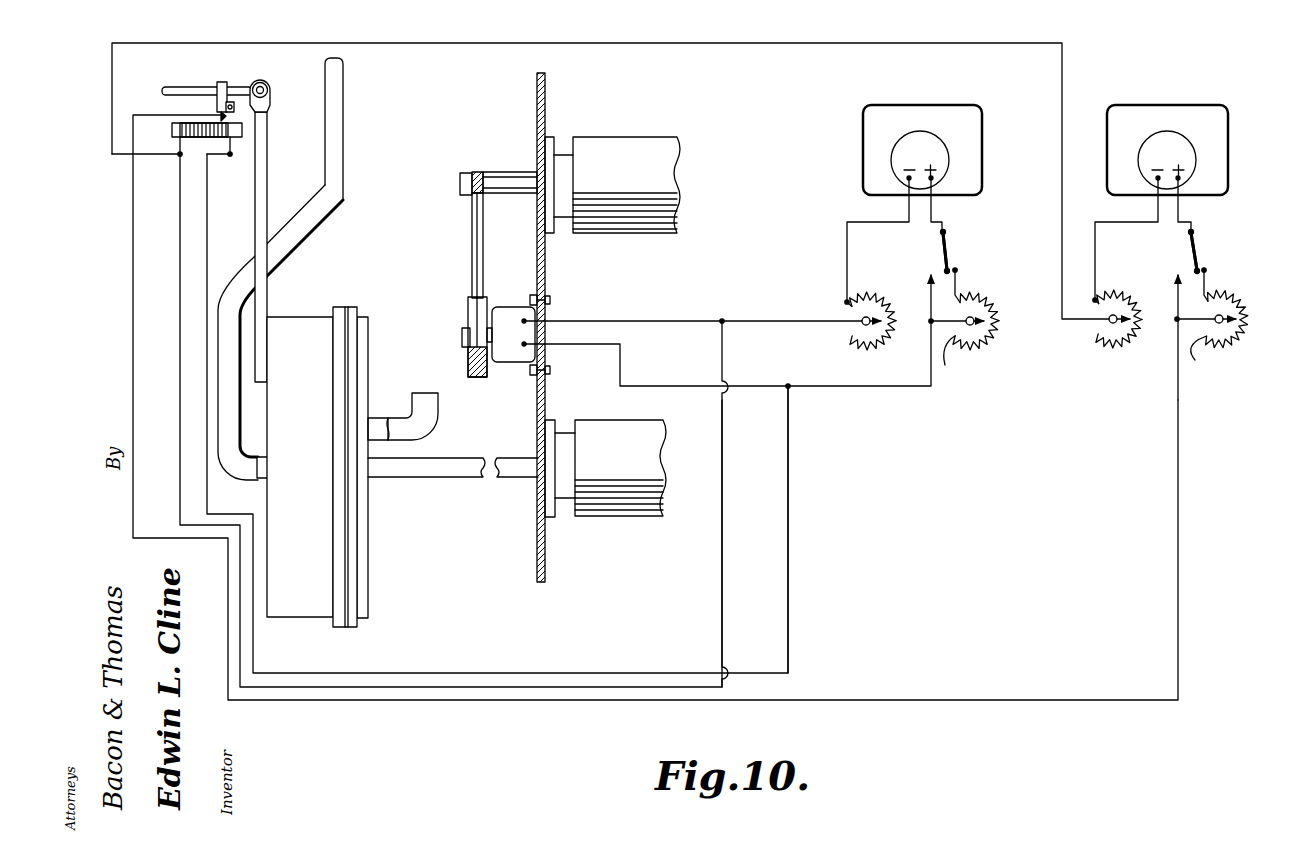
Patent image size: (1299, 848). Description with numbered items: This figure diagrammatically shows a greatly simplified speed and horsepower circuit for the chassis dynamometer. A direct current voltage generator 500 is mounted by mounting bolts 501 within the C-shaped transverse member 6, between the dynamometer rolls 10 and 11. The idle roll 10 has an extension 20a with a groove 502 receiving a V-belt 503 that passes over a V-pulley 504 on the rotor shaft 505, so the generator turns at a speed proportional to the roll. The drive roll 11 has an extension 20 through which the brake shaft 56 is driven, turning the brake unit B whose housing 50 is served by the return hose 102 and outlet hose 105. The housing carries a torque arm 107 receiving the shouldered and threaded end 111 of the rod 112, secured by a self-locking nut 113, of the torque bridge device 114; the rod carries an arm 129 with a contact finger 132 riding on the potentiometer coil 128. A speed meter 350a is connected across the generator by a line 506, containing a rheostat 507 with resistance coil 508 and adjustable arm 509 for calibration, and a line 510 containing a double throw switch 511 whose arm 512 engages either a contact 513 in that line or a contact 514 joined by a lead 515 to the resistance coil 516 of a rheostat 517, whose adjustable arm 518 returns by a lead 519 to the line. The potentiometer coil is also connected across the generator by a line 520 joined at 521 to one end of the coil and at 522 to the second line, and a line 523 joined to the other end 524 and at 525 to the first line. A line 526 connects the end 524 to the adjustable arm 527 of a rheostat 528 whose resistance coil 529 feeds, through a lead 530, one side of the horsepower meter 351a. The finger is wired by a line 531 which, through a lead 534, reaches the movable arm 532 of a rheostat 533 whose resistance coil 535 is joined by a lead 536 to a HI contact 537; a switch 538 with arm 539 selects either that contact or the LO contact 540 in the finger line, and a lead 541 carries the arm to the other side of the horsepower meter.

The transverse member 6 is at (546, 89).
The dynamometer roll 10 is at (647, 138).
The dynamometer roll 11 is at (637, 507).
The extension 20 is at (515, 478).
The extension 20a is at (503, 172).
The housing 50 is at (293, 317).
The brake unit B is at (351, 306).
The brake shaft 56 is at (425, 470).
The brake liquid return hose 102 is at (331, 206).
The outlet hose 105 is at (438, 409).
The torque arm 107 is at (268, 195).
The shouldered and threaded end 111 is at (272, 91).
The rod 112 is at (163, 90).
The self-locking nut 113 is at (265, 82).
The torque bridge device 114 is at (213, 81).
The potentiometer coil 128 is at (242, 129).
The arm 129 is at (226, 82).
The contact finger 132 is at (226, 117).
The speed meter 350a is at (950, 105).
The horsepower meter 351a is at (1177, 105).
The direct current voltage generator 500 is at (508, 306).
The mounting bolts 501 is at (550, 299).
The groove 502 is at (459, 183).
The V-belt 503 is at (471, 240).
The V-pulley 504 is at (467, 355).
The rotor shaft 505 is at (462, 338).
The line 506 is at (672, 320).
The rheostat 507 is at (883, 280).
The resistance coil 508 is at (884, 338).
The adjustable arm 509 is at (862, 325).
The line 510 is at (672, 385).
The double throw switch 511 is at (949, 238).
The arm 512 is at (946, 257).
The contact 513 is at (927, 273).
The contact 514 is at (962, 270).
The lead 515 is at (960, 290).
The resistance coil 516 is at (991, 337).
The rheostat 517 is at (975, 350).
The adjustable arm 518 is at (954, 361).
The lead 519 is at (958, 313).
The line 520 is at (207, 241).
The connection point 521 is at (229, 155).
The connection point 522 is at (790, 385).
The line 523 is at (179, 340).
The end 524 is at (180, 154).
The connection point 525 is at (723, 320).
The line 526 is at (700, 44).
The adjustable arm 527 is at (1120, 330).
The rheostat 528 is at (1131, 347).
The resistance coil 529 is at (1118, 290).
The lead 530 is at (1118, 222).
The line 531 is at (133, 235).
The movable arm 532 is at (1202, 360).
The rheostat 533 is at (1226, 346).
The lead 534 is at (1207, 309).
The resistance coil 535 is at (1240, 305).
The lead 536 is at (1208, 290).
The HI contact 537 is at (1208, 270).
The switch 538 is at (1200, 238).
The arm 539 is at (1200, 255).
The LO contact 540 is at (1174, 277).
The lead 541 is at (1181, 206).